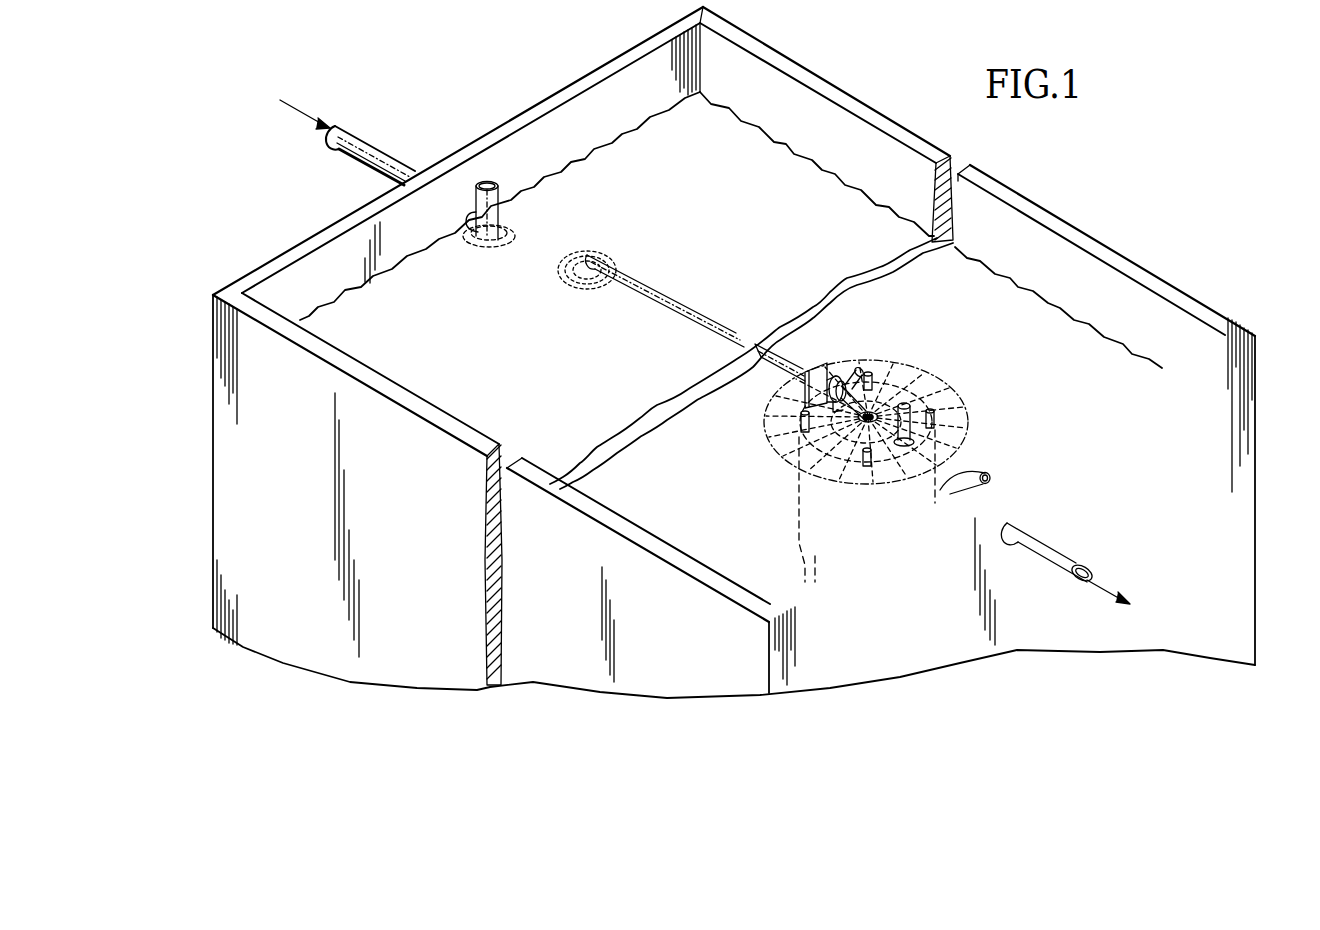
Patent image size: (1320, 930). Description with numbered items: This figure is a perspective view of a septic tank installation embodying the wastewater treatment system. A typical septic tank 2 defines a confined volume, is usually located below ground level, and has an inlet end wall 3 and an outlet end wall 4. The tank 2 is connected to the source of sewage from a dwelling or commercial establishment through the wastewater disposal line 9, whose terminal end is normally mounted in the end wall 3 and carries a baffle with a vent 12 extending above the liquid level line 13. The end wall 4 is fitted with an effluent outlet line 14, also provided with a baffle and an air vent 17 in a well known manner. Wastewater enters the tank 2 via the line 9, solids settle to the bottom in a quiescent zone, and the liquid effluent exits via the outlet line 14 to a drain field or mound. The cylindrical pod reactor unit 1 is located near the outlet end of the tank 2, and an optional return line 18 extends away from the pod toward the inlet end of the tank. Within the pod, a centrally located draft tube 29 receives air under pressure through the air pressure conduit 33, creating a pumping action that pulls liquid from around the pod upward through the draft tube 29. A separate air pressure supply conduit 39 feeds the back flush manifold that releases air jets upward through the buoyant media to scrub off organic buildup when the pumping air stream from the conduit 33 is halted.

The cylindrical pod reactor unit 1 is at (773, 494).
The septic tank 2 is at (1133, 241).
The inlet end wall 3 is at (553, 125).
The outlet end wall 4 is at (1233, 530).
The wastewater disposal line 9 is at (390, 148).
The vent 12 is at (506, 186).
The liquid level line 13 is at (773, 133).
The effluent outlet line 14 is at (1048, 548).
The air vent 17 is at (938, 477).
The return line 18 is at (697, 302).
The draft tube 29 is at (875, 410).
The air pressure conduit 33 is at (853, 348).
The air pressure supply conduit 39 is at (912, 426).